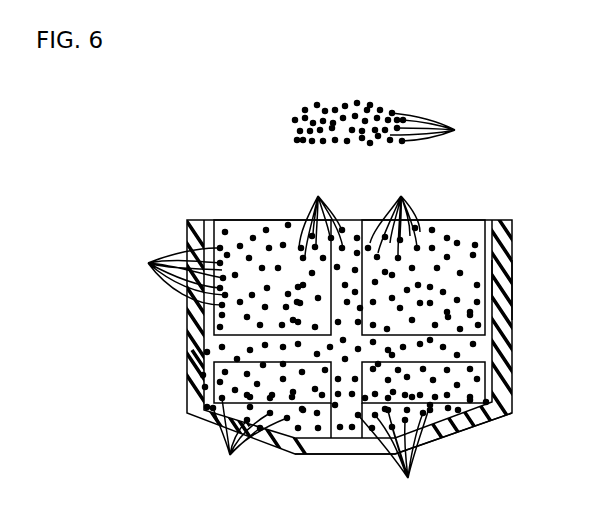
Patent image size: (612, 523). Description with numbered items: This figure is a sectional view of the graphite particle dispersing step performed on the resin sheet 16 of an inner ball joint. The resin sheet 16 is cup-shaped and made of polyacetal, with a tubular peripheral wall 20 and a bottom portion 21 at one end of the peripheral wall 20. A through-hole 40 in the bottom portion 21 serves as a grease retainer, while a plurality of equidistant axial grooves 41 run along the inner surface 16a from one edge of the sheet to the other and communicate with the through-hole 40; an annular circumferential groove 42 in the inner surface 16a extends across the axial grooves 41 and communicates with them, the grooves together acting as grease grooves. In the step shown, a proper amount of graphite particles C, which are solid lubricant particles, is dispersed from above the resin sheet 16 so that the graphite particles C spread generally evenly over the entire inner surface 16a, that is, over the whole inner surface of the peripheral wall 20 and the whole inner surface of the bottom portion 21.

The resin sheet 16 is at (187, 314).
The inner surface 16a is at (487, 265).
The peripheral wall 20 is at (512, 298).
The bottom portion 21 is at (460, 432).
The through-hole 40 is at (322, 444).
The axial grooves 41 is at (333, 297).
The circumferential groove 42 is at (443, 355).
The graphite particles C is at (301, 304).